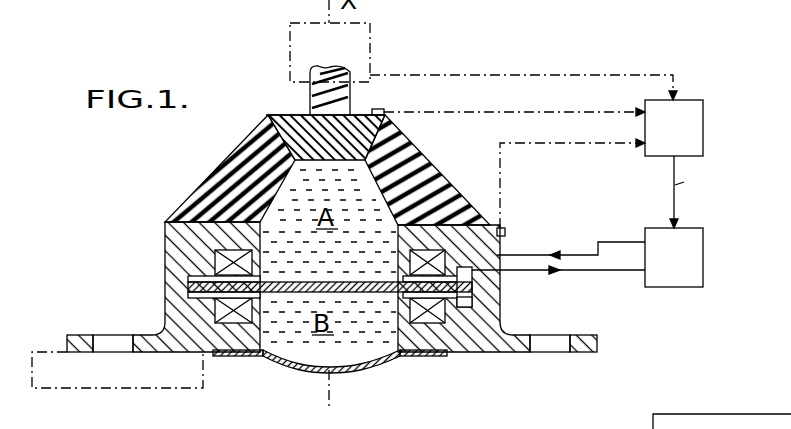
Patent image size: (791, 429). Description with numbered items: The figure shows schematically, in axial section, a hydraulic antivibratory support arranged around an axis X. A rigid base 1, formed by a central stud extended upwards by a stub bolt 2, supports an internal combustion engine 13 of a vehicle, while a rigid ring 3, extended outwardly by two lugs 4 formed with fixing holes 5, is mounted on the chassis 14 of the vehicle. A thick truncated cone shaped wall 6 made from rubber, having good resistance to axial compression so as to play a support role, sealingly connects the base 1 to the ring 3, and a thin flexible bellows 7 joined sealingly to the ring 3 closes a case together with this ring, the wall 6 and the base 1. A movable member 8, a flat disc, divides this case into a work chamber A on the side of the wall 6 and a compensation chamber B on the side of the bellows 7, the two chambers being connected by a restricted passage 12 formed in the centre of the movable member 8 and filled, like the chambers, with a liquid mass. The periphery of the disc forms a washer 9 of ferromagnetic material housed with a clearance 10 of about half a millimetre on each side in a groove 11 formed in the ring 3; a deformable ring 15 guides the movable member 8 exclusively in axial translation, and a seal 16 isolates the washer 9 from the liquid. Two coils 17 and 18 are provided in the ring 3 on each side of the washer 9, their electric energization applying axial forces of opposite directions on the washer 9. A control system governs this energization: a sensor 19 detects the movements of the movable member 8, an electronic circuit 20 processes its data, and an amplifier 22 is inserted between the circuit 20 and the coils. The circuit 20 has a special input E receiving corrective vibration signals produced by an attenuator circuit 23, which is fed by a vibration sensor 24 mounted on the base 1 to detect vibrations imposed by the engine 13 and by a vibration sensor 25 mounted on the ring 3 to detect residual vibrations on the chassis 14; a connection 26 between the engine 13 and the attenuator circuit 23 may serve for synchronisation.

The rigid base 1 is at (267, 116).
The stub bolt 2 is at (310, 95).
The rigid ring 3 is at (485, 335).
The lugs 4 is at (587, 340).
The fixing holes 5 is at (537, 349).
The truncated cone shaped wall 6 is at (247, 178).
The bellows 7 is at (362, 367).
The movable member 8 is at (403, 283).
The washer 9 is at (189, 298).
The clearance 10 is at (463, 262).
The groove 11 is at (428, 356).
The restricted passage 12 is at (334, 282).
The internal combustion engine 13 is at (370, 40).
The chassis 14 is at (140, 375).
The deformable ring 15 is at (471, 288).
The seal 16 is at (400, 297).
The coil 17 is at (230, 356).
The coil 18 is at (215, 260).
The sensor 19 is at (468, 304).
The electronic circuit 20 is at (587, 257).
The amplifier 22 is at (698, 269).
The attenuator circuit 23 is at (692, 144).
The vibration sensor 24 is at (384, 110).
The vibration sensor 25 is at (505, 228).
The connection 26 is at (573, 73).